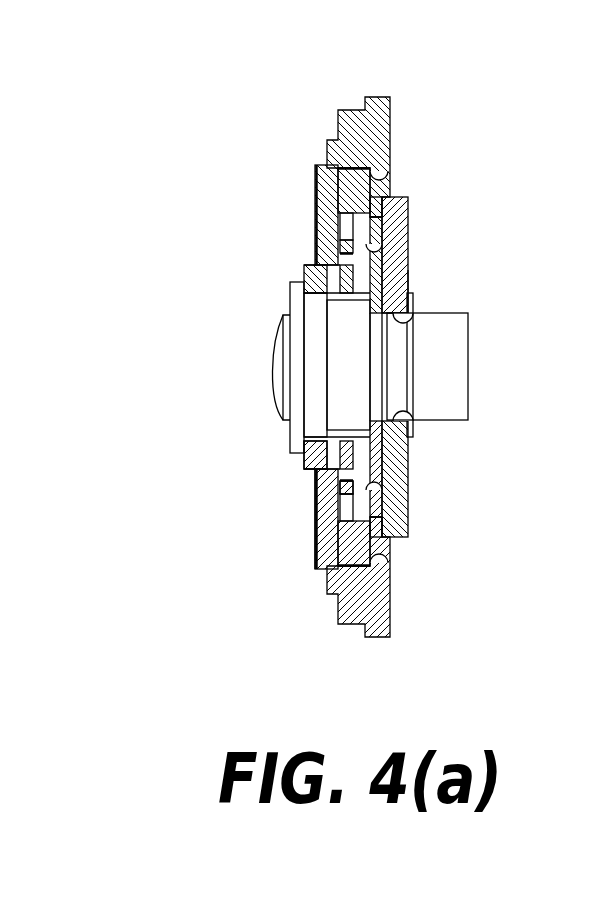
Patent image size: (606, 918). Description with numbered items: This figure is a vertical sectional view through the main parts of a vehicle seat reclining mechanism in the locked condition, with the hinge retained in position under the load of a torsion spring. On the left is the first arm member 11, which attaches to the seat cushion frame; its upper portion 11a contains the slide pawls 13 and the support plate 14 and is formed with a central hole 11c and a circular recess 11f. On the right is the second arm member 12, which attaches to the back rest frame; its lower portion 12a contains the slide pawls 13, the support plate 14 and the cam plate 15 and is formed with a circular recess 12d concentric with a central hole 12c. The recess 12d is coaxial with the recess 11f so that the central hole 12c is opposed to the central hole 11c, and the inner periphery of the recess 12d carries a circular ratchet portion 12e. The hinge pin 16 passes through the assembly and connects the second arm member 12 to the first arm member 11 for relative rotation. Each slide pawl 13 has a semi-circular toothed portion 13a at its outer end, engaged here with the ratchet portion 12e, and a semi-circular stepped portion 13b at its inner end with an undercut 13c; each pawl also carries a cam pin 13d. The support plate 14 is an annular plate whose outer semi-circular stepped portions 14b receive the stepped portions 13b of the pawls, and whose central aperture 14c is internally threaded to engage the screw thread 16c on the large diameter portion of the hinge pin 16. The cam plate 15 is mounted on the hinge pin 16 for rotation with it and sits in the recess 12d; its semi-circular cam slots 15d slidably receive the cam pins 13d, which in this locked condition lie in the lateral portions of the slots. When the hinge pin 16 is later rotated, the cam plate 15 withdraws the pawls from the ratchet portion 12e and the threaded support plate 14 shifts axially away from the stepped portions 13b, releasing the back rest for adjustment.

The first arm member 11 is at (330, 105).
The upper portion 11a is at (332, 498).
The central hole 11c is at (318, 308).
The circular recess 11f is at (345, 538).
The second arm member 12 is at (392, 108).
The lower portion 12a is at (402, 282).
The central hole 12c is at (412, 320).
The circular recess 12d is at (384, 483).
The circular ratchet portion 12e is at (424, 384).
The slide pawl 13 is at (327, 185).
The semi-circular toothed portion 13a is at (380, 176).
The semi-circular stepped portion 13b is at (282, 367).
The undercut 13c is at (402, 248).
The cam pin 13d is at (473, 347).
The support plate 14 is at (327, 456).
The semi-circular stepped portion 14b is at (342, 248).
The central aperture 14c is at (245, 357).
The cam plate 15 is at (396, 455).
The semi-circular cam slot 15d is at (380, 246).
The hinge pin 16 is at (476, 365).
The screw thread 16c is at (350, 295).